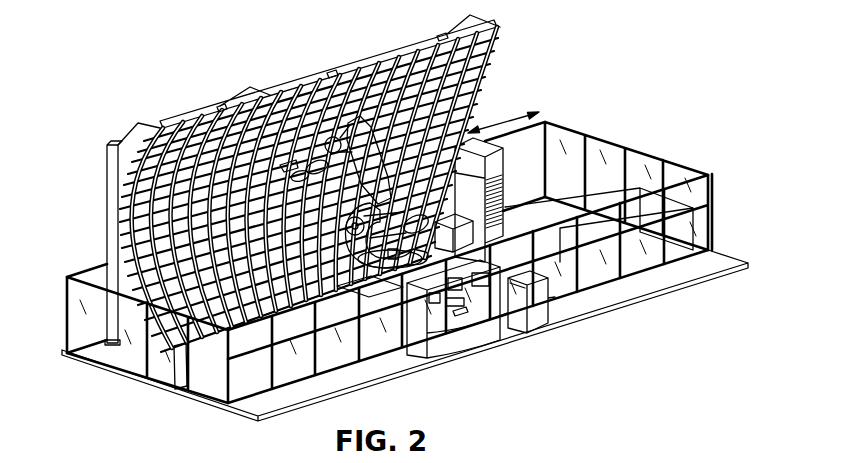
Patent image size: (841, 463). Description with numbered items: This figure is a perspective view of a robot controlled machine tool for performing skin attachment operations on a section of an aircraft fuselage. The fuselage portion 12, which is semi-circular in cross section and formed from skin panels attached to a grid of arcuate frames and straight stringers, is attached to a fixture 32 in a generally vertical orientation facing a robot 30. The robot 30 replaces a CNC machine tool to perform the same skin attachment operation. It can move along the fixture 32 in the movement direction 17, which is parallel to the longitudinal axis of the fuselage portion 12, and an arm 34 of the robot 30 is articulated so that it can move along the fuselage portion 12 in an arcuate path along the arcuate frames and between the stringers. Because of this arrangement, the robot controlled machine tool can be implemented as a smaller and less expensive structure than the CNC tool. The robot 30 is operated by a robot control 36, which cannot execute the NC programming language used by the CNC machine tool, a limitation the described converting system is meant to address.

The fuselage portion 12 is at (468, 88).
The movement direction 17 is at (506, 118).
The robot 30 is at (308, 114).
The fixture 32 is at (122, 207).
The arm 34 is at (328, 72).
The robot control 36 is at (417, 347).